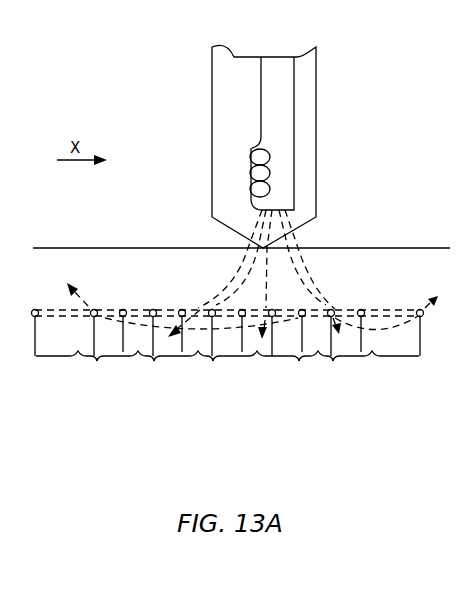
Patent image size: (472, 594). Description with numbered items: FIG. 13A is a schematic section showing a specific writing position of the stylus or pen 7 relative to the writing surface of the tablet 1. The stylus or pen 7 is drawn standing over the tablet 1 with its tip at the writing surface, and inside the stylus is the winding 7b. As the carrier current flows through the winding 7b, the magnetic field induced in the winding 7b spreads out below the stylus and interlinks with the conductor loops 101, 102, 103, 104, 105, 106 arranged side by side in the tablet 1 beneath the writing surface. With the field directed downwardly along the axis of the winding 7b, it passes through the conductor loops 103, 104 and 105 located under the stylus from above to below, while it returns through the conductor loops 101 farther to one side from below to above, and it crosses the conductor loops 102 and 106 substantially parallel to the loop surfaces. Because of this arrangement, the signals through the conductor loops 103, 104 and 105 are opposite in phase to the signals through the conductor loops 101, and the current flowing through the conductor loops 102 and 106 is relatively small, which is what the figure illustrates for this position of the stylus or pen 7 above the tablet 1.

The tablet 1 is at (76, 248).
The stylus or pen 7 is at (316, 147).
The winding 7b is at (250, 146).
The conductor loops 101 is at (65, 348).
The conductor loops 102 is at (127, 348).
The conductor loops 103 is at (185, 348).
The conductor loops 104 is at (256, 348).
The conductor loops 105 is at (317, 348).
The conductor loops 106 is at (378, 348).